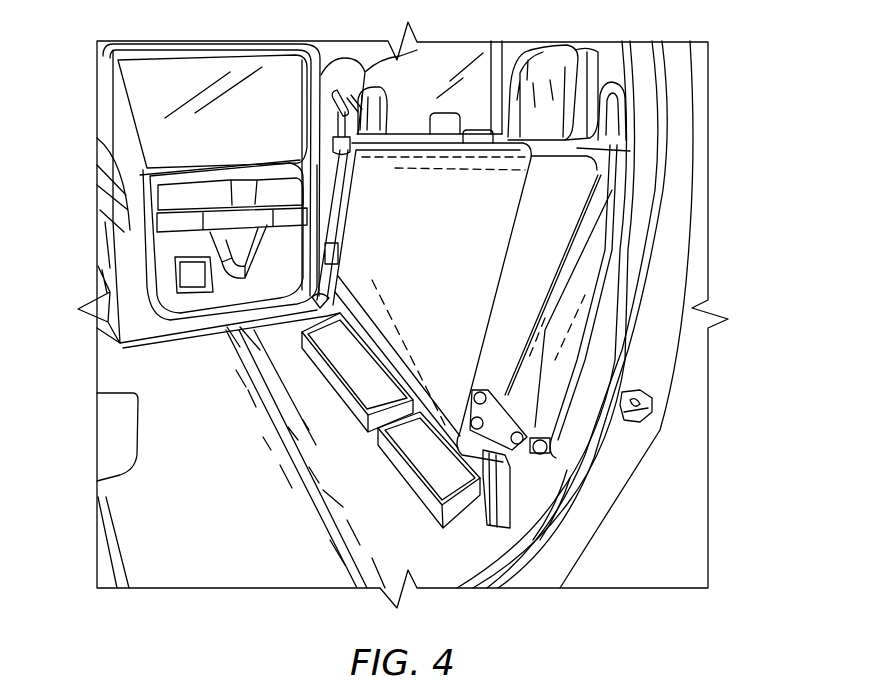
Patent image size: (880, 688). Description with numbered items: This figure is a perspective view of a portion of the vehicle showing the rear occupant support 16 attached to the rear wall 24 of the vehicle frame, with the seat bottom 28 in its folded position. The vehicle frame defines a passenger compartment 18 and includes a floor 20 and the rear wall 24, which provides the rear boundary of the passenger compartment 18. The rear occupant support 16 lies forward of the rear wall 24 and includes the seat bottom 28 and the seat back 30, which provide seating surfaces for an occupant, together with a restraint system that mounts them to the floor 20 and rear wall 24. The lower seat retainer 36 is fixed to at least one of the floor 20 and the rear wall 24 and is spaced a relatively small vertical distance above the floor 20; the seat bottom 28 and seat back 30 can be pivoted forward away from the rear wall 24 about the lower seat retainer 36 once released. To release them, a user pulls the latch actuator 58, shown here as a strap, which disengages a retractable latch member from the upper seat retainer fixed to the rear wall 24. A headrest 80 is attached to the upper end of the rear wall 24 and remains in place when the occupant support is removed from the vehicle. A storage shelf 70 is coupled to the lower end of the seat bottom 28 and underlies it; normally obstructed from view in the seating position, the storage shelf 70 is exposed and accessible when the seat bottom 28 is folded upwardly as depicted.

The rear occupant support 16 is at (505, 50).
The passenger compartment 18 is at (323, 63).
The floor 20 is at (147, 561).
The rear wall 24 is at (612, 258).
The seat bottom 28 is at (413, 167).
The seat back 30 is at (611, 198).
The lower seat retainer 36 is at (555, 447).
The latch actuator 58 is at (608, 83).
The storage shelf 70 is at (343, 406).
The headrest 80 is at (583, 44).